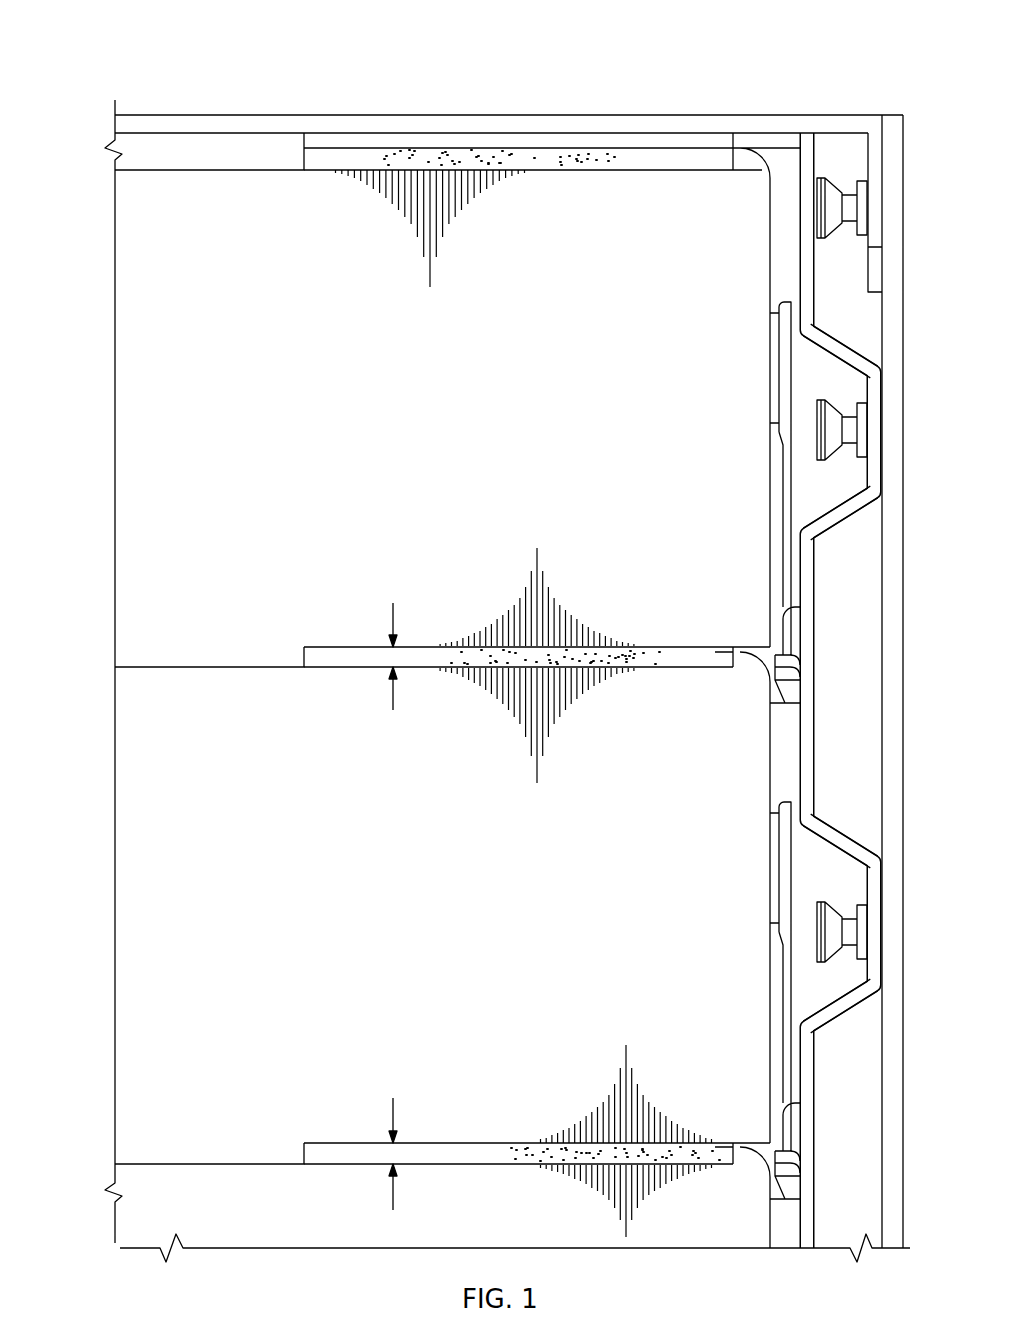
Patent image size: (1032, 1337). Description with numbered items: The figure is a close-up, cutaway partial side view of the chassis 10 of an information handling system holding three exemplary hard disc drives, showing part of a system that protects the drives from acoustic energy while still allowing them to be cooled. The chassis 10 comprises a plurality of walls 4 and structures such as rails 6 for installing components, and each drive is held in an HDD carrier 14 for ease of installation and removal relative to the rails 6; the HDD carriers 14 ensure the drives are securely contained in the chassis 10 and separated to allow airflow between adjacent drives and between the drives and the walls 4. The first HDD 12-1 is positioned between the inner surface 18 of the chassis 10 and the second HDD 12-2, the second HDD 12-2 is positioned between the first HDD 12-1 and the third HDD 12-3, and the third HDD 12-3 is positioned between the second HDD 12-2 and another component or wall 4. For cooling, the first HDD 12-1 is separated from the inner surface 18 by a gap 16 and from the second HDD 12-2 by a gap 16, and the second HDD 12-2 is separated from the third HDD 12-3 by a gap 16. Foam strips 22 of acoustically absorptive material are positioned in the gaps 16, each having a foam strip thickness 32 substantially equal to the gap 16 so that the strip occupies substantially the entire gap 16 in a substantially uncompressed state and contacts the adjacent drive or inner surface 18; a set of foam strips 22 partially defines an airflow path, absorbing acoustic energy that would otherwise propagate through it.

The chassis 10 is at (273, 50).
The wall 4 is at (770, 114).
The rail 6 is at (850, 512).
The first HDD 12-1 is at (122, 404).
The second HDD 12-2 is at (122, 924).
The third HDD 12-3 is at (122, 1226).
The HDD carrier 14 is at (786, 358).
The gap 16 is at (170, 146).
The inner surface 18 is at (236, 135).
The foam strip 22 is at (658, 172).
The foam strip thickness 32 is at (392, 608).